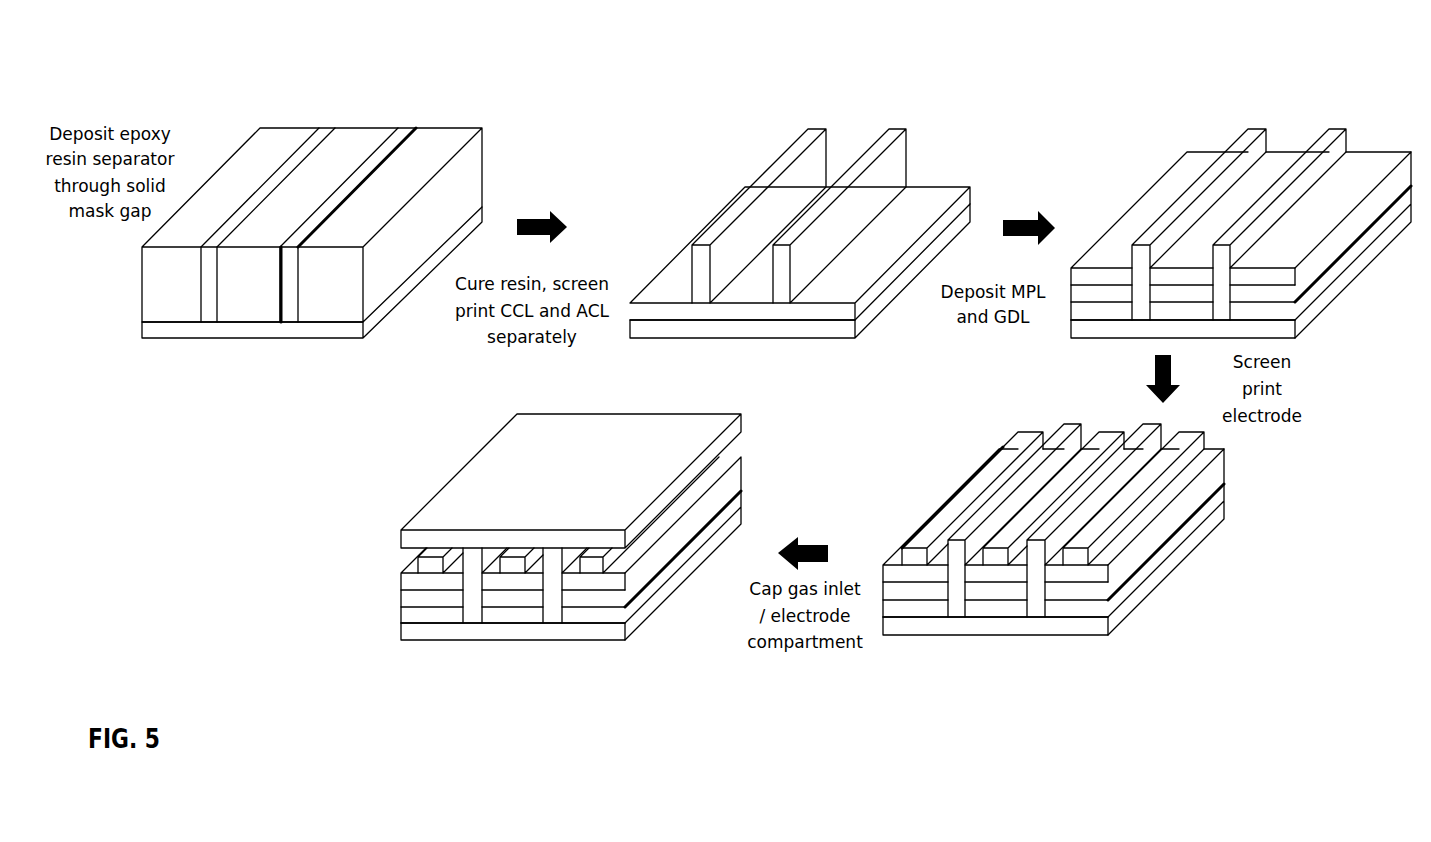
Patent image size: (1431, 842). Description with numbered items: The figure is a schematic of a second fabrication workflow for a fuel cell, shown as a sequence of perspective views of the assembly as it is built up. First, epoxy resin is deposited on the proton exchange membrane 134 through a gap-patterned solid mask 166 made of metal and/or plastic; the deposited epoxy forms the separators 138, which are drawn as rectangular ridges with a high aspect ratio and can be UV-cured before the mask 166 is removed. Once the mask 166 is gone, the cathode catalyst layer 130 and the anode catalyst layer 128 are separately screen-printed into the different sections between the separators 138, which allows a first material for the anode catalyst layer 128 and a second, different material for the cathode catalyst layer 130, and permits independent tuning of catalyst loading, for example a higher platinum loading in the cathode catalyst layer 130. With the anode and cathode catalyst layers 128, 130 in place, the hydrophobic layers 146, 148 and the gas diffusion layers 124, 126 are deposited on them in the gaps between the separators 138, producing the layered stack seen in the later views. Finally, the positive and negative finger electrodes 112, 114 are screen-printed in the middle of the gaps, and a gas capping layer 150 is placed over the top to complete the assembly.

The positive finger electrode 112 is at (968, 492).
The negative finger electrode 114 is at (1053, 490).
The gas diffusion layer 124 is at (1114, 252).
The gas diffusion layer 126 is at (1204, 237).
The anode catalyst layer 128 is at (922, 195).
The cathode catalyst layer 130 is at (745, 321).
The proton exchange membrane 134 is at (324, 337).
The separator 138 is at (305, 152).
The hydrophobic layer 146 is at (1110, 298).
The hydrophobic layer 148 is at (1207, 303).
The gas capping layer 150 is at (443, 512).
The solid mask 166 is at (358, 150).